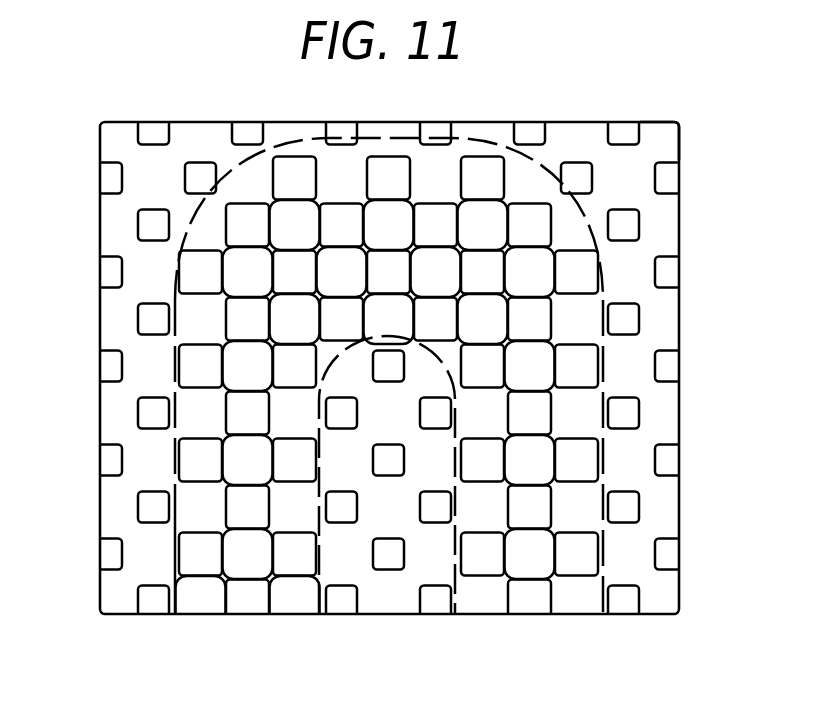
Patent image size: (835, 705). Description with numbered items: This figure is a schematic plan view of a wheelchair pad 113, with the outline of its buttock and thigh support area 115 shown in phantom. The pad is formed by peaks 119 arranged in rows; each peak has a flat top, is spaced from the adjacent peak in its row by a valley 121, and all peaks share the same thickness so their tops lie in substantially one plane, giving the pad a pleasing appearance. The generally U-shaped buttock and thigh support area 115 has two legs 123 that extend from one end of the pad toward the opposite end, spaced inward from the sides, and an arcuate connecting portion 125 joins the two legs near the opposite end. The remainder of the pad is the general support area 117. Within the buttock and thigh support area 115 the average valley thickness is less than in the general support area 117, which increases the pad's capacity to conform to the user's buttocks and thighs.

The wheelchair pad 113 is at (592, 116).
The buttock and thigh support area 115 is at (486, 600).
The general support area 117 is at (656, 113).
The peaks 119 is at (150, 168).
The valley 121 is at (198, 173).
The legs 123 is at (163, 480).
The arcuate connecting portion 125 is at (471, 134).